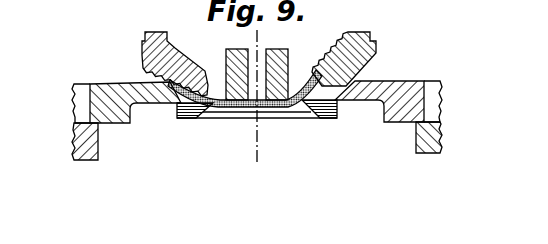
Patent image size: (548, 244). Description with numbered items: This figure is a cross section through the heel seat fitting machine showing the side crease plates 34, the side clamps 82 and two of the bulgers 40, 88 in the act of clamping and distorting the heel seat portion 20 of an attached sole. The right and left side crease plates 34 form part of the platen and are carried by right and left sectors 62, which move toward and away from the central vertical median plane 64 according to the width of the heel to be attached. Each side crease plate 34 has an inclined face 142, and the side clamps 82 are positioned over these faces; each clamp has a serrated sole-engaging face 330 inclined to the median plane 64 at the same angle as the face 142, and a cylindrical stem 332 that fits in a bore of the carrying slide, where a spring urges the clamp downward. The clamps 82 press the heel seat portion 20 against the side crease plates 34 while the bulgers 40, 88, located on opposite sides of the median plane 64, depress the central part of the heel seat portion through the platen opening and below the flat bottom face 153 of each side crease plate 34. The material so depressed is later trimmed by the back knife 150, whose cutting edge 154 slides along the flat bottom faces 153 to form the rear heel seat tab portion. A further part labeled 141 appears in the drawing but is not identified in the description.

The heel seat portion 20 is at (298, 93).
The side crease plate 34 is at (103, 93).
The bulger 40 is at (130, 6).
The sector 62 is at (78, 161).
The vertical median plane 64 is at (257, 160).
The side clamp 82 is at (172, 46).
The bulger 88 is at (250, 52).
The passage 141 is at (92, 6).
The inclined face 142 is at (350, 80).
The back knife 150 is at (339, 100).
The flat bottom face 153 is at (159, 103).
The cutting edge 154 is at (355, 99).
The serrated sole-engaging face 330 is at (143, 68).
The cylindrical stem 332 is at (147, 32).